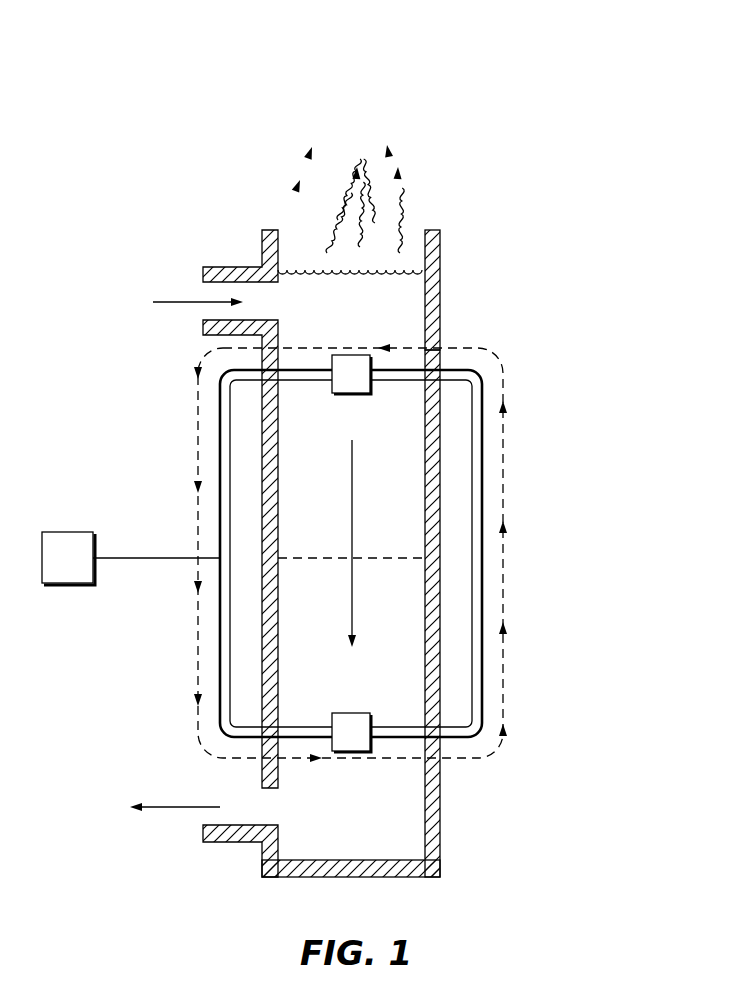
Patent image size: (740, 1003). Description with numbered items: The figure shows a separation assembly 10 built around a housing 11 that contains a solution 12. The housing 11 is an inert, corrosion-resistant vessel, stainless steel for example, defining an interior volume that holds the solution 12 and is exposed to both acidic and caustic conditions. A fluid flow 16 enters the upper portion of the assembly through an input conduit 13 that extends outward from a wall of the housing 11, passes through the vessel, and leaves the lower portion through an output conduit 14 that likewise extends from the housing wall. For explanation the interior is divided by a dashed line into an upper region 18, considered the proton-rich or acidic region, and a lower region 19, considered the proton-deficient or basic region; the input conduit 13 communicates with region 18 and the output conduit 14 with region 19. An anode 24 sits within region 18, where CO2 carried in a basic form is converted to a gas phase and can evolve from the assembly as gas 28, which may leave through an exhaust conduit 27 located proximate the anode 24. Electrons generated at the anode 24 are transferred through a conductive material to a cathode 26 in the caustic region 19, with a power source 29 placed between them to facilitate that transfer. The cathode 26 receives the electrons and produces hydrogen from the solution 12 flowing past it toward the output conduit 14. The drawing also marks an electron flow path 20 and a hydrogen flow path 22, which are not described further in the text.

The assembly 10 is at (537, 70).
The housing 11 is at (440, 298).
The solution 12 is at (300, 268).
The conduit 13 is at (232, 267).
The conduit 14 is at (232, 842).
The fluid flow 16 is at (175, 300).
The region 18 is at (393, 468).
The region 19 is at (393, 692).
The electron flow path 20 is at (198, 520).
The hydrogen flow path 22 is at (503, 662).
The anode 24 is at (352, 376).
The cathode 26 is at (352, 750).
The exhaust conduit 27 is at (440, 245).
The gas 28 is at (412, 262).
The power source 29 is at (131, 554).